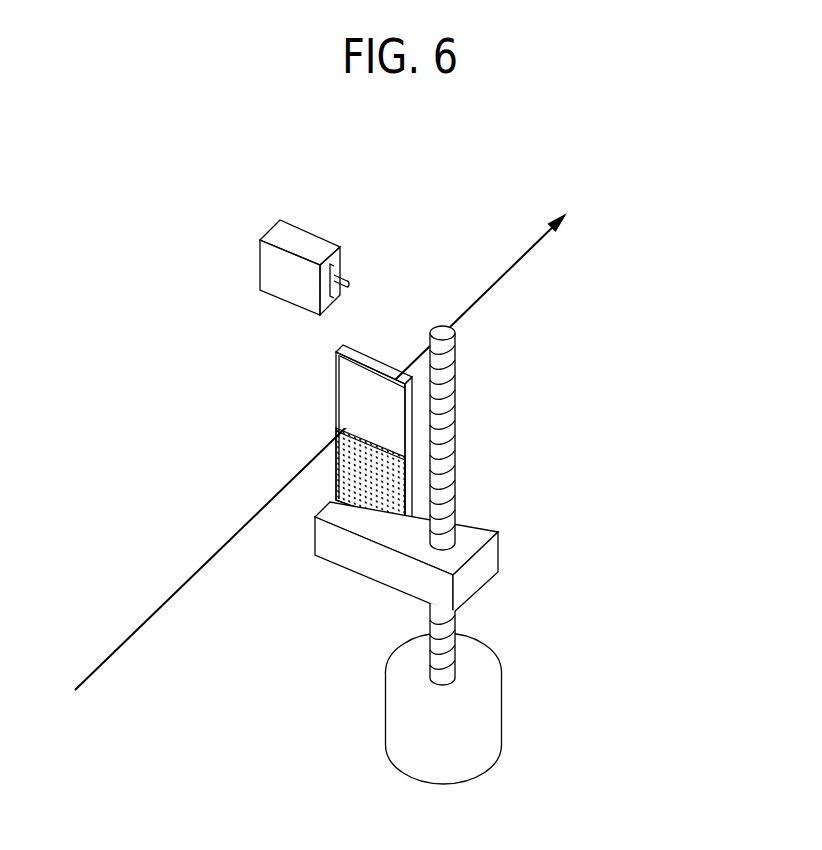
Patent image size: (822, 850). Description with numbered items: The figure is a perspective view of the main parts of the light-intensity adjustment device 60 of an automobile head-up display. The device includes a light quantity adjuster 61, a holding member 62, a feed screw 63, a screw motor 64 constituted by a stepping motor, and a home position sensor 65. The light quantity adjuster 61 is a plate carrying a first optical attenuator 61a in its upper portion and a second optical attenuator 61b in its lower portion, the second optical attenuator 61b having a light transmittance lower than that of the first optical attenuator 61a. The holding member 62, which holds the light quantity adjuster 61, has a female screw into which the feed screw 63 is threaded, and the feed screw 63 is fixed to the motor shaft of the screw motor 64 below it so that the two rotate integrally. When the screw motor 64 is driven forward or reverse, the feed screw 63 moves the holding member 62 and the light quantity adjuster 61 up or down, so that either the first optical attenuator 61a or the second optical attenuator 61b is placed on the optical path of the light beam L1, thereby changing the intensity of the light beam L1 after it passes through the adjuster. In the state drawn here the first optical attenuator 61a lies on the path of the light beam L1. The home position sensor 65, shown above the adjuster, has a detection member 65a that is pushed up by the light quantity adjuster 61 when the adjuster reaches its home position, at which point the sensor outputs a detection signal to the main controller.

The light-intensity adjustment device 60 is at (461, 210).
The light quantity adjuster 61 is at (329, 431).
The first optical attenuator 61a is at (350, 380).
The second optical attenuator 61b is at (347, 483).
The holding member 62 is at (468, 515).
The feed screw 63 is at (455, 420).
The screw motor 64 is at (390, 655).
The HP sensor 65 is at (331, 233).
The detection member 65a is at (345, 277).
The light beam L1 is at (170, 597).